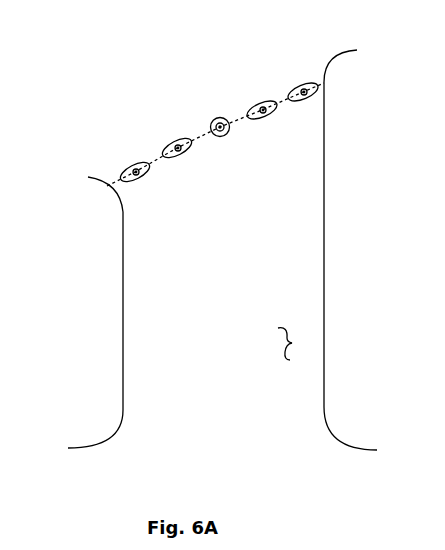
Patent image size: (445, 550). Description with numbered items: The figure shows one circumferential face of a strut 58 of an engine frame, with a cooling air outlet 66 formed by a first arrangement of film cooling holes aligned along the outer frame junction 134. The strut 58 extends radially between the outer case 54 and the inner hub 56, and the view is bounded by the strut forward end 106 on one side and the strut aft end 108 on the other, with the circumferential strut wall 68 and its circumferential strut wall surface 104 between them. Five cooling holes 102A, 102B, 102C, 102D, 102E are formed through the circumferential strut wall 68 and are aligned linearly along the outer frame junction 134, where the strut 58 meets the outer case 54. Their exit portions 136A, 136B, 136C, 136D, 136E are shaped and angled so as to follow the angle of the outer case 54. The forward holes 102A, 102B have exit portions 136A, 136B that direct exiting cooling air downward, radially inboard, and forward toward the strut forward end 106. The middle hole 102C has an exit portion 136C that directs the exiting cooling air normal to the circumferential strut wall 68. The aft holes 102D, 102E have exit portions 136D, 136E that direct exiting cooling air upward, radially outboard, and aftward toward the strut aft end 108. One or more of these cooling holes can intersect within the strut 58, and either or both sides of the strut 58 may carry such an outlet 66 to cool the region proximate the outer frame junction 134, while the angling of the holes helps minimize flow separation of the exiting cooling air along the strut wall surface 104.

The outer case 54 is at (193, 76).
The inner hub 56 is at (238, 444).
The strut 58 is at (109, 287).
The outlet 66 is at (171, 103).
The circumferential strut wall 68 is at (268, 288).
The cooling hole 102A is at (141, 188).
The cooling hole 102B is at (190, 166).
The cooling hole 102C is at (228, 153).
The cooling hole 102D is at (287, 120).
The cooling hole 102E is at (337, 79).
The circumferential strut wall surface 104 is at (292, 343).
The strut forward end 106 is at (123, 328).
The strut aft end 108 is at (324, 268).
The outer frame junction 134 is at (172, 134).
The exit portion 136A is at (123, 179).
The exit portion 136B is at (167, 153).
The exit portion 136C is at (220, 117).
The exit portion 136D is at (262, 100).
The exit portion 136E is at (307, 82).